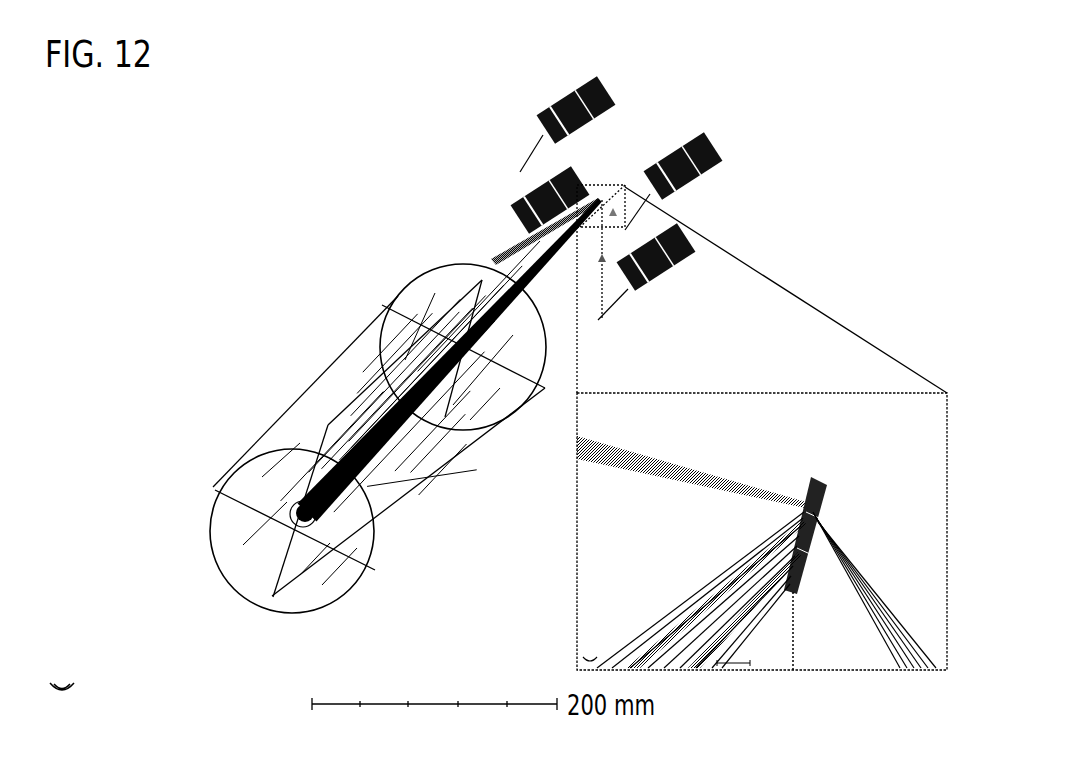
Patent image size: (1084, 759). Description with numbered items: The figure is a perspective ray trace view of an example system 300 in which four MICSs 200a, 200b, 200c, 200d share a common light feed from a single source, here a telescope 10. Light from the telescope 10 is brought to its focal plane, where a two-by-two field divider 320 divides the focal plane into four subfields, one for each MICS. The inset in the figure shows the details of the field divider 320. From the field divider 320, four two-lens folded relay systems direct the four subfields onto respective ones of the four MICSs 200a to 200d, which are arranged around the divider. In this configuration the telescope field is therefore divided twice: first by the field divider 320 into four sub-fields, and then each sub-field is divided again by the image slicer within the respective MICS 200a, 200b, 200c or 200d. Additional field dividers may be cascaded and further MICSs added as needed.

The telescope 10 is at (338, 351).
The system 300 is at (822, 87).
The MICS 200a is at (566, 124).
The MICS 200b is at (698, 181).
The MICS 200c is at (663, 271).
The MICS 200d is at (533, 215).
The field divider 320 is at (762, 409).